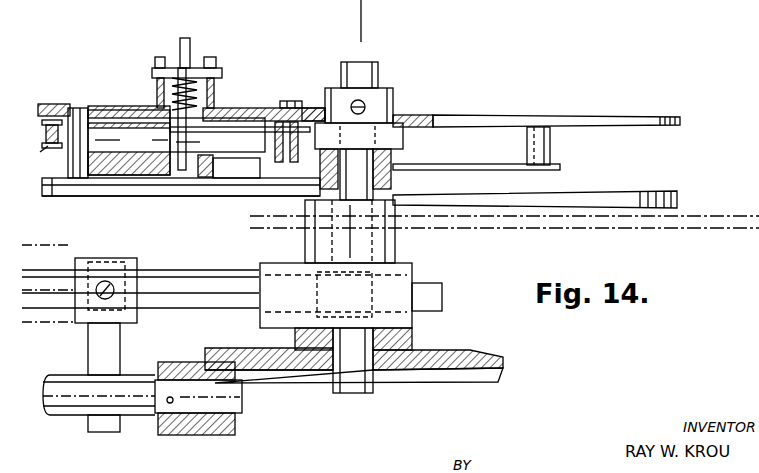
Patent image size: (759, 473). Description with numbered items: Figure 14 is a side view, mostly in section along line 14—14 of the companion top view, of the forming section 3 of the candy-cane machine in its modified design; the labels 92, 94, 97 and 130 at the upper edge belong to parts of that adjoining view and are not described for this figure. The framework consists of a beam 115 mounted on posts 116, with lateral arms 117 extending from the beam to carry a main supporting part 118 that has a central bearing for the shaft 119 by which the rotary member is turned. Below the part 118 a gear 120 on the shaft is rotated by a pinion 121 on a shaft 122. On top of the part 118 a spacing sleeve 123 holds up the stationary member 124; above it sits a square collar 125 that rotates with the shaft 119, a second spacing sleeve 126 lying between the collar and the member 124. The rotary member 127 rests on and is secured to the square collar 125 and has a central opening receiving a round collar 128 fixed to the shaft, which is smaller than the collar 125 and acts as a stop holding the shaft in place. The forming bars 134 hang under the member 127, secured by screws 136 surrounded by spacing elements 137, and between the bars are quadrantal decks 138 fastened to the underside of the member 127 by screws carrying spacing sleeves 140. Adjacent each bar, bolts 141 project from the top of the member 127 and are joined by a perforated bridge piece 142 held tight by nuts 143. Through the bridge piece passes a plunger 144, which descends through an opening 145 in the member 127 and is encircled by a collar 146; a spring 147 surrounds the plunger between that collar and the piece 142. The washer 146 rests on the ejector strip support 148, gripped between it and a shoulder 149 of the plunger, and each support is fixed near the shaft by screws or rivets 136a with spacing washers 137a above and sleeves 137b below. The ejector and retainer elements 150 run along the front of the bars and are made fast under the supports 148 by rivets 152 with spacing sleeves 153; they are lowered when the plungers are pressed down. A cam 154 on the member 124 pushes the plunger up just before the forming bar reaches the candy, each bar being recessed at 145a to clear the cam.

The forming section 3 is at (735, 233).
The section line 14 is at (365, 24).
The member 92 is at (479, 25).
The member 94 is at (513, 0).
The member 97 is at (447, 7).
The member 130 is at (664, 6).
The beam 115 is at (88, 258).
The posts 116 is at (120, 350).
The lateral arms 117 is at (200, 270).
The main supporting part 118 is at (412, 268).
The shaft 119 is at (365, 393).
The gear 120 is at (475, 383).
The pinion 121 is at (242, 430).
The shaft 122 is at (155, 418).
The spacing sleeve 123 is at (395, 240).
The stationary member 124 is at (678, 196).
The square collar 125 is at (405, 135).
The spacing sleeve 126 is at (395, 175).
The rotary member 127 is at (681, 121).
The round collar 128 is at (395, 100).
The forming bars 134 is at (88, 180).
The screws 136 is at (80, 108).
The screws or rivets 136a is at (290, 101).
The spacing elements 137 is at (129, 142).
The spacing washers 137a is at (305, 160).
The washers or sleeves 137b is at (313, 108).
The decks 138 is at (560, 170).
The spacing sleeves 140 is at (551, 145).
The bolts 141 is at (213, 92).
The perforated bridge piece 142 is at (158, 76).
The nuts 143 is at (216, 62).
The plunger 144 is at (190, 46).
The opening 145 is at (175, 95).
The recess 145a is at (160, 178).
The collar 146 is at (250, 110).
The spring 147 is at (184, 80).
The ejector strip support 148 is at (262, 132).
The shoulder 149 is at (125, 178).
The ejector and retainer elements 150 is at (36, 158).
The rivets 152 is at (55, 104).
The spacing sleeves 153 is at (45, 128).
The cam 154 is at (190, 178).